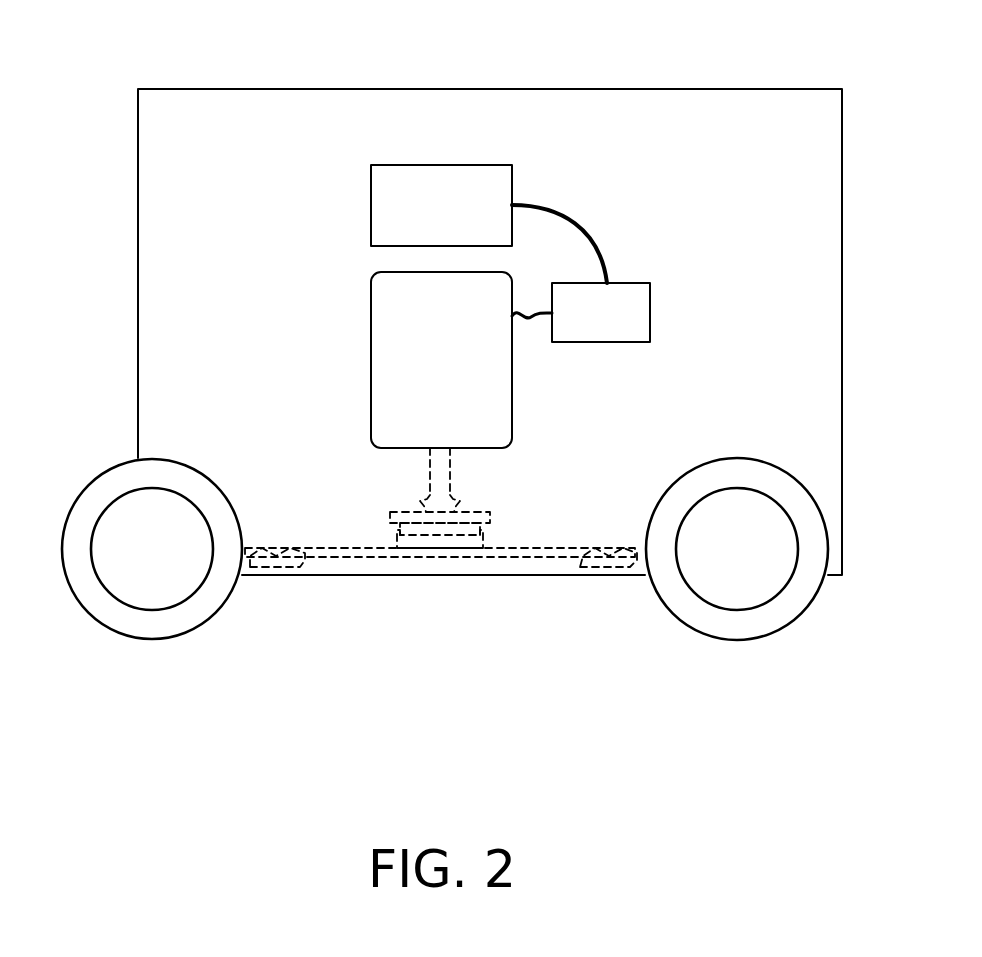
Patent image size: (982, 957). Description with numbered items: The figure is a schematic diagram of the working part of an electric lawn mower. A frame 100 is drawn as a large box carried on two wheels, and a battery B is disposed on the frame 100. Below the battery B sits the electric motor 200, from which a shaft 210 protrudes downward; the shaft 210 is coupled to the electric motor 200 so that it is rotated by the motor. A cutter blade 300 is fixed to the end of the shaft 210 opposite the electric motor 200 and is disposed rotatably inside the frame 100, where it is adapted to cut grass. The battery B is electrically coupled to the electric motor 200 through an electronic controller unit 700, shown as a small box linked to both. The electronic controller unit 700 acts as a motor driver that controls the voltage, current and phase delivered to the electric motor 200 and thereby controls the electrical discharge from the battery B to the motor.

The frame 100 is at (627, 89).
The battery B is at (371, 205).
The electric motor 200 is at (371, 323).
The shaft 210 is at (430, 477).
The electronic controller unit (ECU) 700 is at (650, 312).
The cutter blade 300 is at (620, 556).